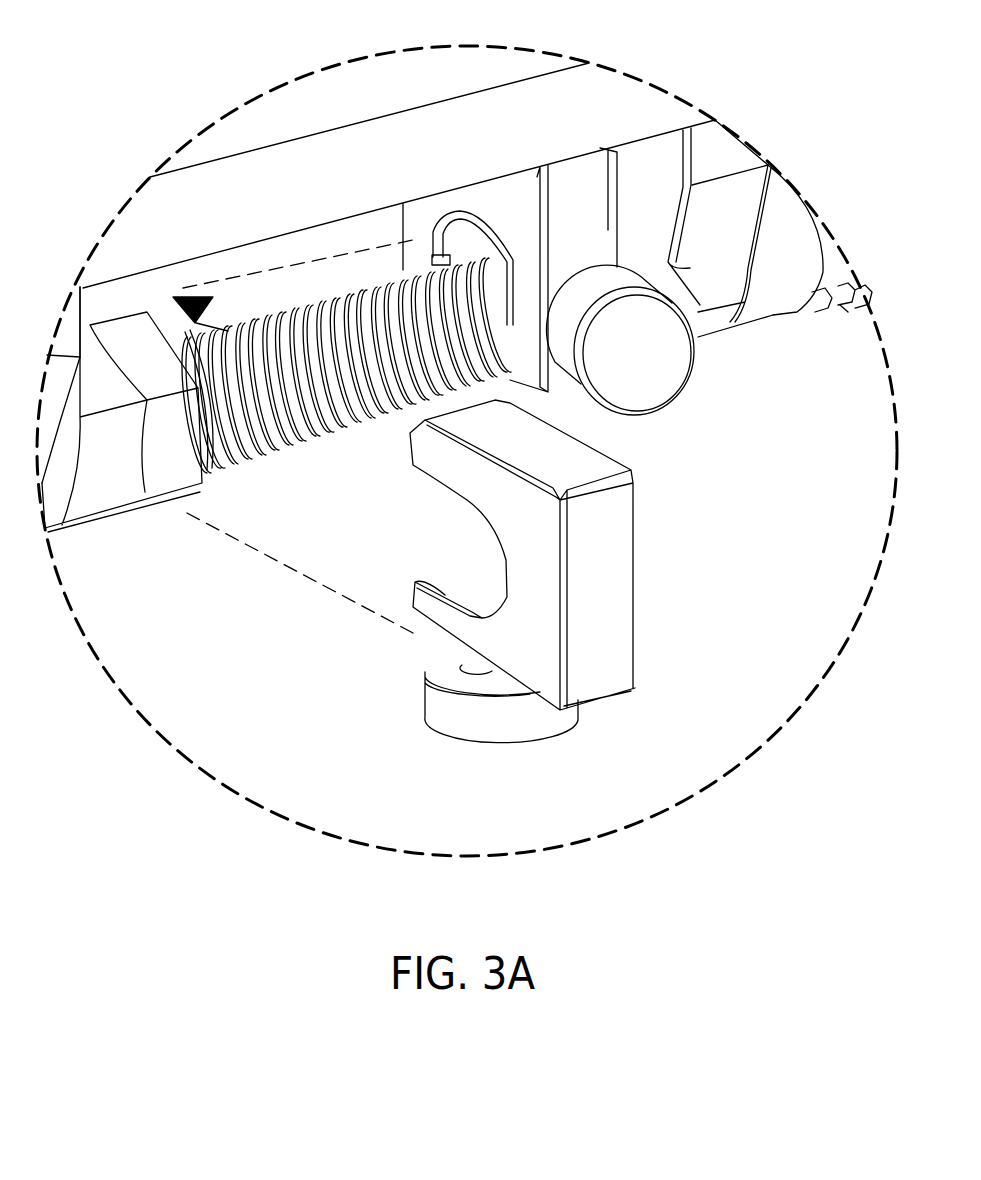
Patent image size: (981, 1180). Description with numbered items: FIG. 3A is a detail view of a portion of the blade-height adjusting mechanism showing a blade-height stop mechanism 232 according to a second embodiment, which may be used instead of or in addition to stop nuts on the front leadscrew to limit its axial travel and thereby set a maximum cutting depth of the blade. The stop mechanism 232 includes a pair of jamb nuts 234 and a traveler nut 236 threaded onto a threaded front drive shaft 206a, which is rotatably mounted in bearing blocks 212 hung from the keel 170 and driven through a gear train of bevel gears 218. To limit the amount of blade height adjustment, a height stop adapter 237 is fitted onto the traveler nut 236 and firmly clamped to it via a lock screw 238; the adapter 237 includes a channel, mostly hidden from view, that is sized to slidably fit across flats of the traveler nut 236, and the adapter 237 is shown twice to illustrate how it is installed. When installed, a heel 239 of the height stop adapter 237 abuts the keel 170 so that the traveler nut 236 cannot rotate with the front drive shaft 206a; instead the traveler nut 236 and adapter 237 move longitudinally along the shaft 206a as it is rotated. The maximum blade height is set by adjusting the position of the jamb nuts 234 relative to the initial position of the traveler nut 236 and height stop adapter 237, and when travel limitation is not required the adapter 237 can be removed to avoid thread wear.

The keel 170 is at (303, 163).
The threaded front drive shaft 206a is at (320, 403).
The bearing blocks 212 is at (710, 290).
The bevel gears 218 is at (767, 290).
The blade-height stop mechanism 232 is at (262, 655).
The jamb nuts 234 is at (102, 498).
The traveler nut 236 is at (537, 400).
The height stop adapter 237 is at (578, 207).
The lock screw 238 is at (657, 383).
The heel 239 is at (625, 600).